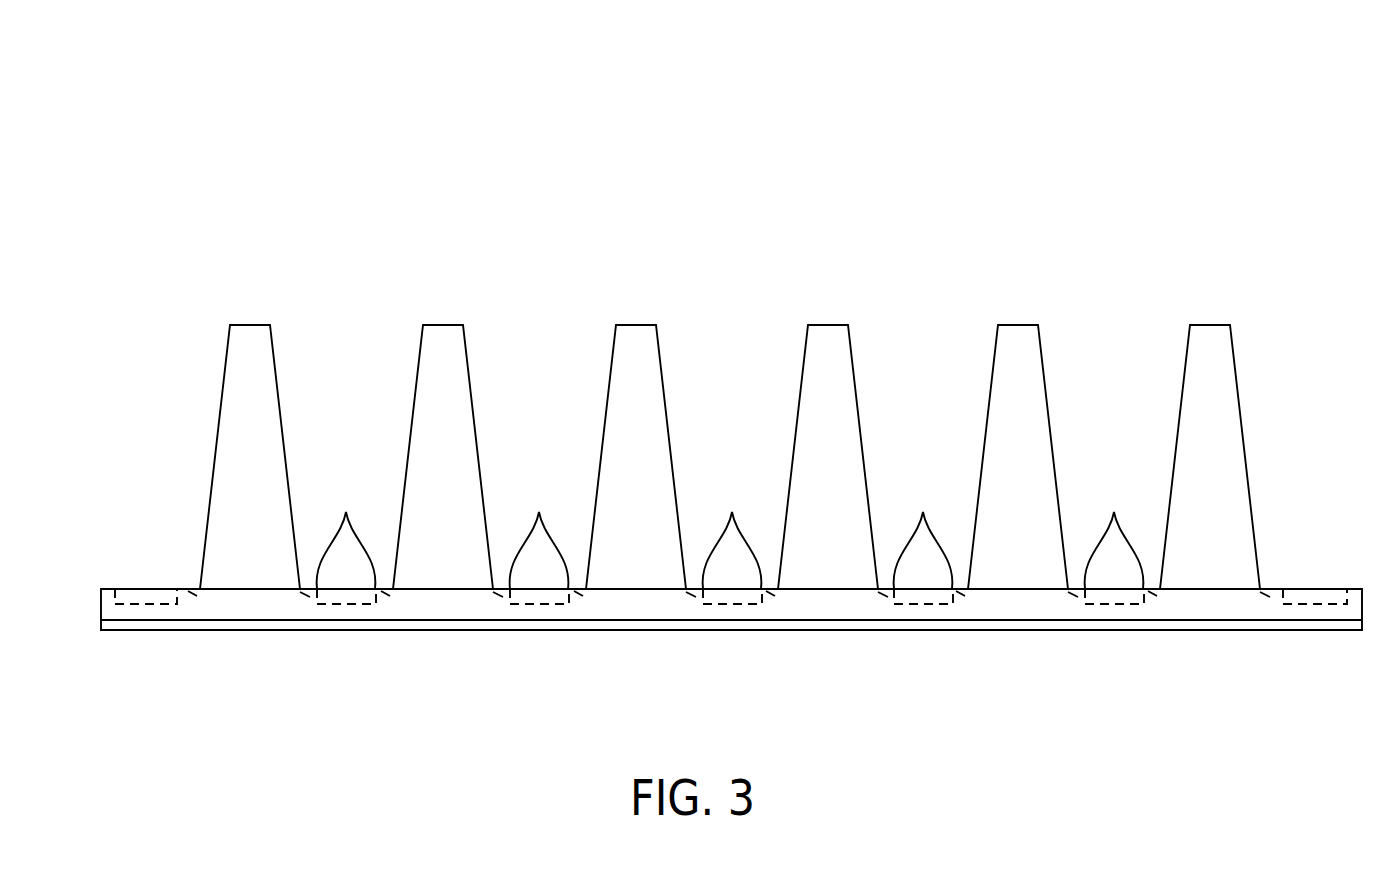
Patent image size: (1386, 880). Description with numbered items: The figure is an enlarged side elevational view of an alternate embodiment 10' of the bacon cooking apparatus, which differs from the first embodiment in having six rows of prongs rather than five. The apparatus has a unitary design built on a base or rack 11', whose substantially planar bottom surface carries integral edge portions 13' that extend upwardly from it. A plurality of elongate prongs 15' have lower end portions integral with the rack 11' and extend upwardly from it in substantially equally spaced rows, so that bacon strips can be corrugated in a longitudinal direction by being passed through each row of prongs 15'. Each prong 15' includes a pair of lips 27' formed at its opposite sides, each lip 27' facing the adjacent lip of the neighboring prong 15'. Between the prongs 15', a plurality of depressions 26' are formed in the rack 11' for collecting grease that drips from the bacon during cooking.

The alternate embodiment of the cooking apparatus 10' is at (810, 140).
The base or rack 11' is at (726, 555).
The edge portion 13' is at (731, 660).
The prong 15' is at (729, 426).
The depression 26' is at (731, 654).
The lip 27' is at (734, 517).